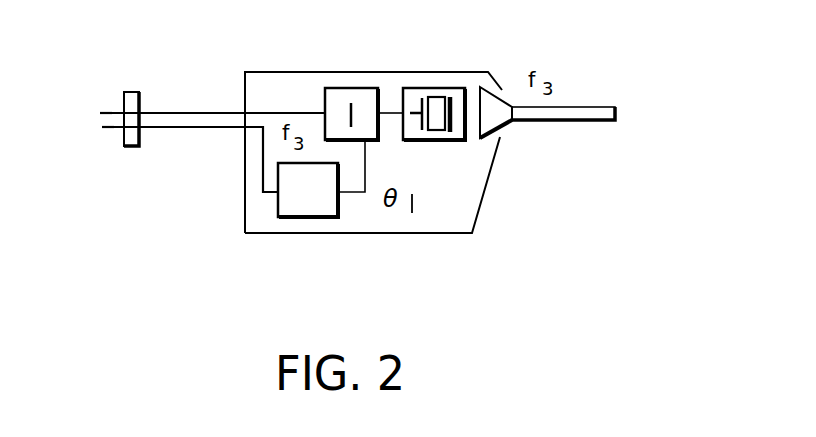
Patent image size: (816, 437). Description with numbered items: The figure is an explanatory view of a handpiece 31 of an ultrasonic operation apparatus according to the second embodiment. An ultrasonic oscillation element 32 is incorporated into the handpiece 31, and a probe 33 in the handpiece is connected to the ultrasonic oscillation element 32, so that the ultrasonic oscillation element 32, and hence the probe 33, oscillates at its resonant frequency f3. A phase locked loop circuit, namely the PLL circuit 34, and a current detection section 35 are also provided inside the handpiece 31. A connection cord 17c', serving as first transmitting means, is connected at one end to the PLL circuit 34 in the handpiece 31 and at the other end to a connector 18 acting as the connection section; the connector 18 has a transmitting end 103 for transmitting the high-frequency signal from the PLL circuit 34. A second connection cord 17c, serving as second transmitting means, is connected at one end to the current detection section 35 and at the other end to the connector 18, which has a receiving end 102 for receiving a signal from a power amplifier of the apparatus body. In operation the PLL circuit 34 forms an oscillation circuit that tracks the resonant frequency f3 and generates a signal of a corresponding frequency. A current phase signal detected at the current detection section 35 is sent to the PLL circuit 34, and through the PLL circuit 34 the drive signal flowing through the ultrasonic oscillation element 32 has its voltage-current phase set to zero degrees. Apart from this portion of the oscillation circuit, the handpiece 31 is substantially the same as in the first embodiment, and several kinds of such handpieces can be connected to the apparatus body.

The receiving end 102 is at (111, 111).
The transmitting end 103 is at (107, 129).
The connector 18 is at (128, 91).
The connection cord 17c is at (212, 76).
The connection cord 17c' is at (190, 165).
The handpiece 31 is at (267, 72).
The ultrasonic oscillation element 32 is at (445, 87).
The probe 33 is at (605, 107).
The phase locked loop (PLL) circuit 34 is at (327, 218).
The current detection section 35 is at (353, 87).